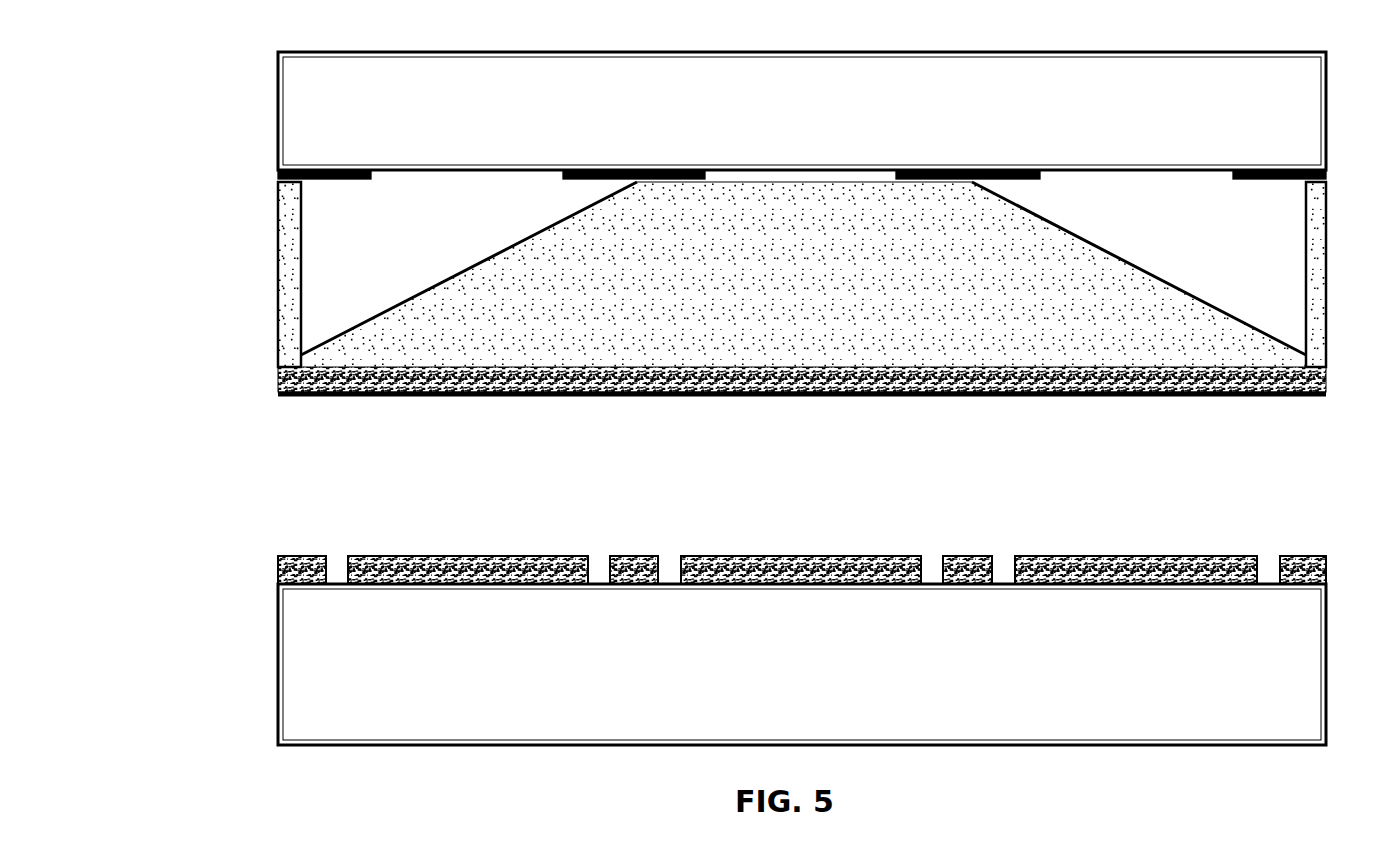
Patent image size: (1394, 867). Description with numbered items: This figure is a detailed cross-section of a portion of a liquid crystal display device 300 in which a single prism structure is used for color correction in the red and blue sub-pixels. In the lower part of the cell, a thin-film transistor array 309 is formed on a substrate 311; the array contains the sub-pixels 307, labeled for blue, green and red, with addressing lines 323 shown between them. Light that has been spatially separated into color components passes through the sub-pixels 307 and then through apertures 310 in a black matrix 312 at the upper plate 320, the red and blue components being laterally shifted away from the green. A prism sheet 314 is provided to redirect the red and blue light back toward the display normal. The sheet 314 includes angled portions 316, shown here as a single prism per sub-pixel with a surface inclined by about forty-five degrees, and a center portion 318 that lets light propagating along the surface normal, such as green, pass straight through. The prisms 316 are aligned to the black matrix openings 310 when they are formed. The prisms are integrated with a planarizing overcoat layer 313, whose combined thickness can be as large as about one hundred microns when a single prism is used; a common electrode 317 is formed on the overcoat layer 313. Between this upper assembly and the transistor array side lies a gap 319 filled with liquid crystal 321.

The liquid crystal display device 300 is at (472, 764).
The sub-pixel 307 is at (435, 556).
The thin-film transistor array 309 is at (1312, 520).
The aperture 310 is at (472, 158).
The substrate 311 is at (1313, 708).
The black matrix 312 is at (326, 170).
The planarizing overcoat layer 313 is at (818, 286).
The prism sheet 314 is at (262, 246).
The angled portion 316 is at (415, 244).
The common electrode 317 is at (1326, 390).
The center portion 318 is at (817, 184).
The gap 319 is at (270, 398).
The top plate 320 is at (1312, 107).
The liquid crystal 321 is at (613, 484).
The addressing line 323 is at (302, 556).